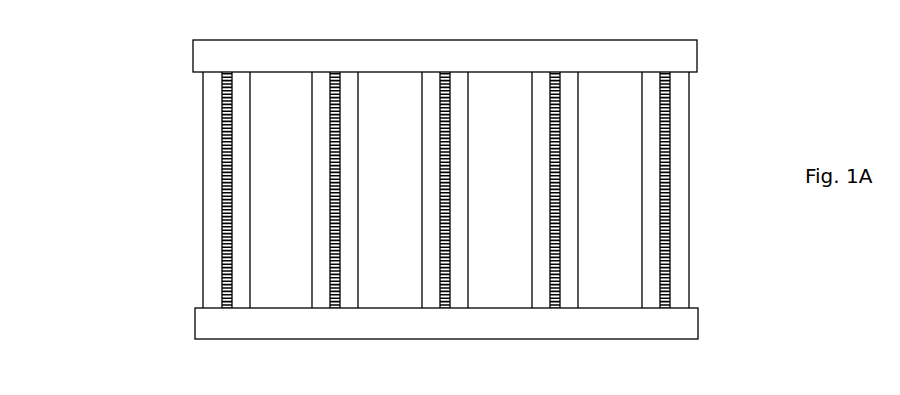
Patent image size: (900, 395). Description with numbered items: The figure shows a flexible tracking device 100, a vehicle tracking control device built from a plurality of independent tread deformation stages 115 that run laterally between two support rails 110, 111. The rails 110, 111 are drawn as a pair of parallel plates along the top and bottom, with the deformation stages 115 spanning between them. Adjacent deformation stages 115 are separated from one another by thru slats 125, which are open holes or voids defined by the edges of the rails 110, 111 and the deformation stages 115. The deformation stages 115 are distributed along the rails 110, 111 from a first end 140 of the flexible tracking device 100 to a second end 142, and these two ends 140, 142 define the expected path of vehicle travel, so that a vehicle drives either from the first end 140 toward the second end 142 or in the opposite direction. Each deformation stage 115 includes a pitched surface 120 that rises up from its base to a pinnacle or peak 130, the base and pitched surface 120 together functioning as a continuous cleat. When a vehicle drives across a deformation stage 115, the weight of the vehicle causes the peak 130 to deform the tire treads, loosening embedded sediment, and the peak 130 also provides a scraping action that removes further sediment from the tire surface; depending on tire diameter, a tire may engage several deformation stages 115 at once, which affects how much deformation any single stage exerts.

The flexible tracking device 100 is at (79, 105).
The support rail 110 is at (705, 306).
The support rail 111 is at (697, 52).
The tread deformation stage 115 is at (251, 110).
The pitched surface 120 is at (212, 165).
The thru slat 125 is at (285, 290).
The peak 130 is at (225, 268).
The first end 140 is at (175, 200).
The second end 142 is at (710, 182).